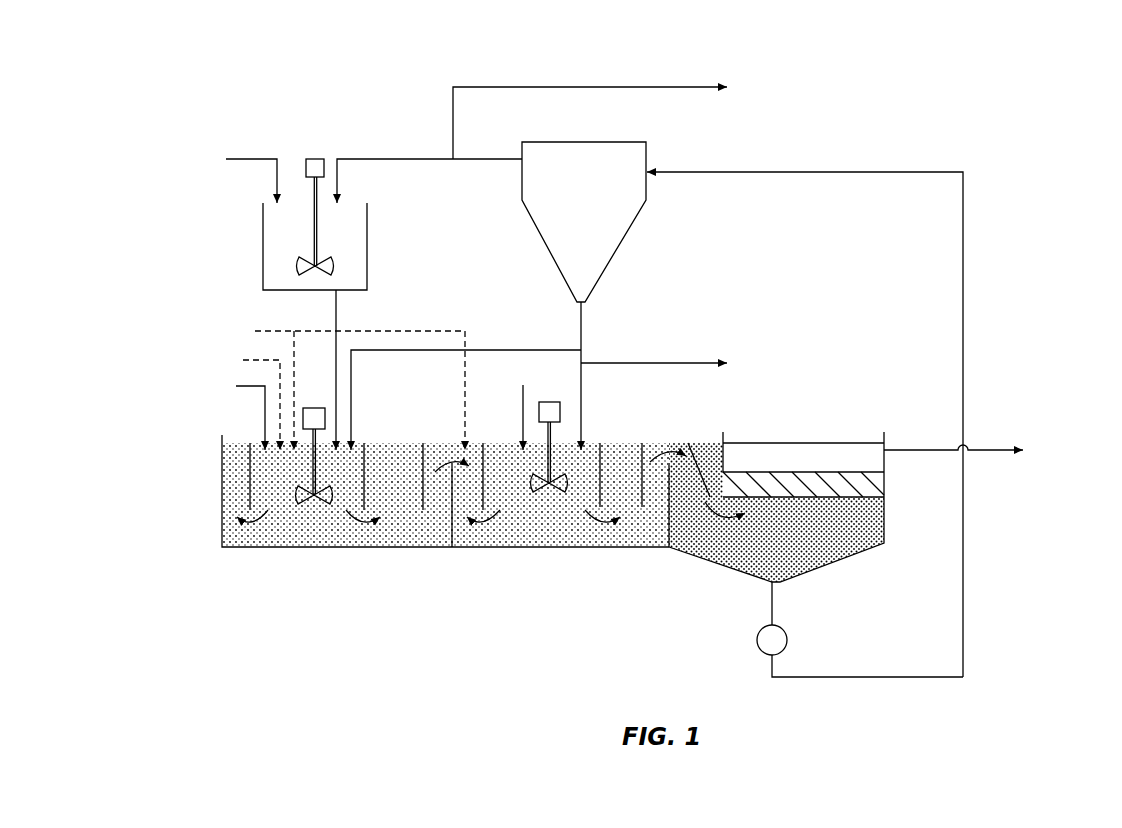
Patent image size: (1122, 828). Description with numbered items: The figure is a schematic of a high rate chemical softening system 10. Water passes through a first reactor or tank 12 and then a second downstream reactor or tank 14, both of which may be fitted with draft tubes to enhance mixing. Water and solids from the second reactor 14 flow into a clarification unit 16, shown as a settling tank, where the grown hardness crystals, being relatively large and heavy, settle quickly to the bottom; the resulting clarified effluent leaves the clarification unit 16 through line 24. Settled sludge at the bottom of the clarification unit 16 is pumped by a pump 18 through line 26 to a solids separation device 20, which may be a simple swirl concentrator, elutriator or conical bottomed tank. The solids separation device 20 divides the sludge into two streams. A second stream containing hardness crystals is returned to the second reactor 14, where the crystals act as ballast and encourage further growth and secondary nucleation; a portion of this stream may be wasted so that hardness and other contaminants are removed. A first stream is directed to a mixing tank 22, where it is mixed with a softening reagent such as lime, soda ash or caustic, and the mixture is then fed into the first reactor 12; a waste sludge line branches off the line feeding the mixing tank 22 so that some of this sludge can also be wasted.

The high rate chemical softening system 10 is at (938, 52).
The first reactor 12 is at (270, 536).
The second reactor 14 is at (502, 546).
The clarification unit 16 is at (726, 556).
The pump 18 is at (758, 649).
The solids separation device 20 is at (618, 251).
The mixing tank 22 is at (368, 247).
The line 24 is at (993, 446).
The line 26 is at (965, 256).